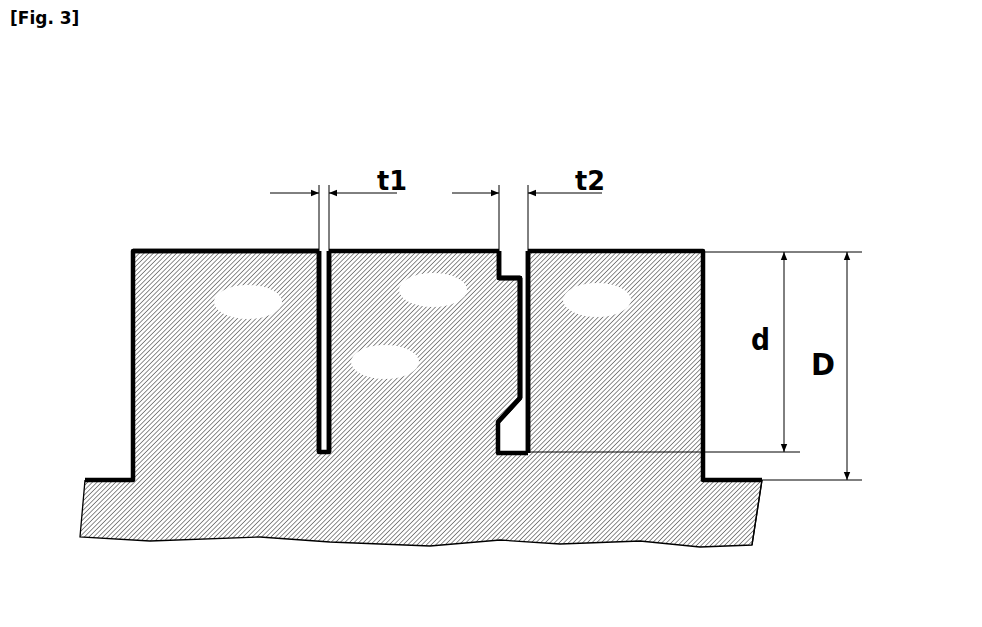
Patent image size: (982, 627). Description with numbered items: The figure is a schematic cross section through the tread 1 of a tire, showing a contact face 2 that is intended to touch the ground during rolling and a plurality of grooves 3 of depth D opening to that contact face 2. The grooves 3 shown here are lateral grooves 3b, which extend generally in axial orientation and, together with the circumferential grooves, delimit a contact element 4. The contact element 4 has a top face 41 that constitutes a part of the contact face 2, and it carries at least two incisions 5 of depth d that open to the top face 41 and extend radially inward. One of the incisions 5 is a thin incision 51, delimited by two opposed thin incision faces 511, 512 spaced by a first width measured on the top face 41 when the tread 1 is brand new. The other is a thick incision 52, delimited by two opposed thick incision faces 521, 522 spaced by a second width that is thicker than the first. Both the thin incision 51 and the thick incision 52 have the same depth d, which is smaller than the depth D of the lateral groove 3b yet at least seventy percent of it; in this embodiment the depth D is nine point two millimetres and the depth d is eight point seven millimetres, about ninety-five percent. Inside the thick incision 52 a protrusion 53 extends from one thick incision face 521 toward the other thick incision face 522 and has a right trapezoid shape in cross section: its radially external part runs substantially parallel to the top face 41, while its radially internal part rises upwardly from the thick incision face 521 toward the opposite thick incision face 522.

The tread 1 is at (641, 160).
The contact face 2 is at (655, 251).
The grooves 3 is at (108, 462).
The lateral groove 3b is at (730, 468).
The contact element 4 is at (162, 316).
The top face 41 is at (183, 250).
The incisions 5 is at (423, 437).
The thin incision 51 is at (316, 437).
The thick incision 52 is at (515, 432).
The protrusion 53 is at (505, 368).
The thin incision face 511 is at (320, 280).
The thin incision face 512 is at (324, 330).
The thick incision face 521 is at (501, 268).
The thick incision face 522 is at (529, 276).